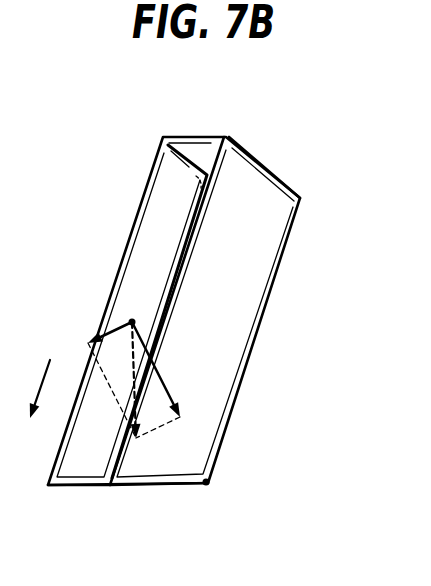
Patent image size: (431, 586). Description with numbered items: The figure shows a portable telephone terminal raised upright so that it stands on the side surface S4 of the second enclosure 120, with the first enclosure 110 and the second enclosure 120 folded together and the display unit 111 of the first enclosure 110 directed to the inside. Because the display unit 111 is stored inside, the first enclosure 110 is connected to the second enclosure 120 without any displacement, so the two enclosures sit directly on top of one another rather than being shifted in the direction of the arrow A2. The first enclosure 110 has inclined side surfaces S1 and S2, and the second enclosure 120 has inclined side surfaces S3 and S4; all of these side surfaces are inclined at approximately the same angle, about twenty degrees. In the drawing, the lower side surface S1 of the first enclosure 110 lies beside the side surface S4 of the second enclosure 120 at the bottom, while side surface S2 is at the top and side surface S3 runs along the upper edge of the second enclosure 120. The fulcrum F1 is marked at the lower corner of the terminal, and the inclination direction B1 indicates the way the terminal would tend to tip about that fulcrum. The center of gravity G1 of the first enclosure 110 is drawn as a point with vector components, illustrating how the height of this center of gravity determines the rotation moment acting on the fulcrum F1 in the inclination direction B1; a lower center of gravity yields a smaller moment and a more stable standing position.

The first enclosure 110 is at (163, 197).
The display unit 111 is at (134, 236).
The second enclosure 120 is at (242, 273).
The side surface of the first enclosure S1 is at (73, 488).
The side surface of the first enclosure S2 is at (184, 149).
The side surface of the second enclosure S3 is at (272, 168).
The side surface of the second enclosure S4 is at (152, 488).
The fulcrum F1 is at (209, 482).
The center of gravity of the first enclosure G1 is at (128, 321).
The inclination direction B1 is at (160, 372).
The arrow indicating displacement direction A2 is at (37, 377).